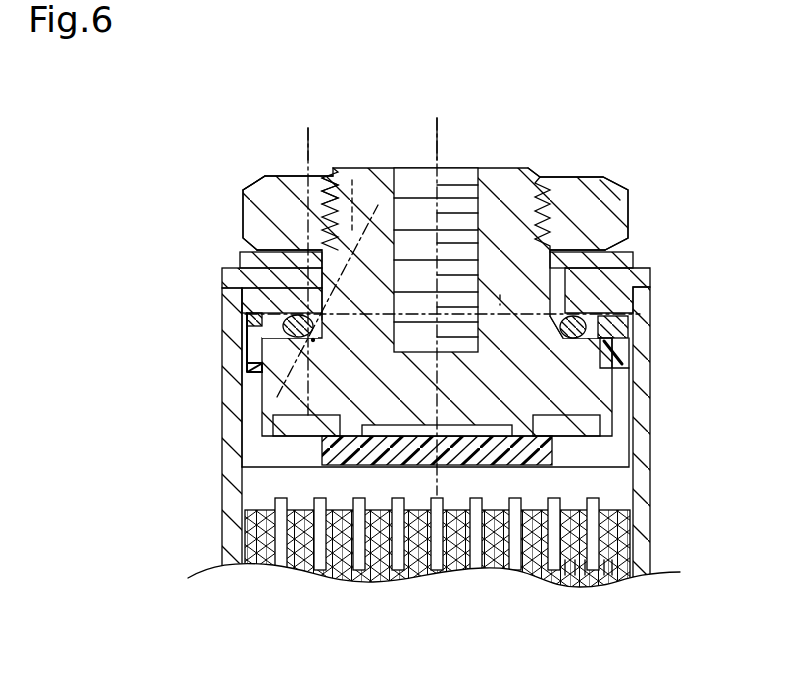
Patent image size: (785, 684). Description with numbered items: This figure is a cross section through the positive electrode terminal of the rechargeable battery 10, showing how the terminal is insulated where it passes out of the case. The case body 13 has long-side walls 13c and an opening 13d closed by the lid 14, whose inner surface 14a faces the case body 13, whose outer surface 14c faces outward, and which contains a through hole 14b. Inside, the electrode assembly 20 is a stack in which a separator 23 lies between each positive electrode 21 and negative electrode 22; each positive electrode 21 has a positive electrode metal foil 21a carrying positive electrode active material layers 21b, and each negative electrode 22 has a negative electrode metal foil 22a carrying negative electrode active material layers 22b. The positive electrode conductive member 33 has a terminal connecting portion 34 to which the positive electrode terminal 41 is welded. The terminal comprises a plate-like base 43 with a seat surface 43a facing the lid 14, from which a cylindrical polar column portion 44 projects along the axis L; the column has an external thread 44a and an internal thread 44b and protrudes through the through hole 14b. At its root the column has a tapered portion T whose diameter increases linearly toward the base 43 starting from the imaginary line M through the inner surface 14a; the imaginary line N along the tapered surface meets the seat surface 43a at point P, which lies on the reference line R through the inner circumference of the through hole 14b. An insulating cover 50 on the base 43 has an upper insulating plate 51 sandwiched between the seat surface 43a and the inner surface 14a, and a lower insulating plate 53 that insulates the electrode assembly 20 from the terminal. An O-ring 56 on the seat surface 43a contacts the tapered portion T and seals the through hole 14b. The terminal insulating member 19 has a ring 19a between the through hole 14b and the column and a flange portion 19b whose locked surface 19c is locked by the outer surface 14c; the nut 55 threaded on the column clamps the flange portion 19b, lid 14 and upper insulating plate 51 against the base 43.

The rechargeable battery 10 is at (716, 112).
The case body 13 is at (650, 458).
The long-side wall 13c is at (222, 528).
The opening 13d is at (247, 410).
The lid 14 is at (650, 280).
The inner surface 14a is at (625, 327).
The through hole 14b is at (625, 265).
The outer surface 14c is at (240, 260).
The terminal insulating member 19 is at (637, 255).
The ring 19a is at (313, 277).
The flange portion 19b is at (242, 250).
The locked surface 19c is at (590, 283).
The electrode assembly 20 is at (442, 564).
The positive electrode 21 is at (533, 510).
The positive electrode metal foil 21a is at (582, 580).
The positive electrode active material layer 21b is at (575, 587).
The negative electrode 22 is at (627, 507).
The negative electrode metal foil 22a is at (615, 578).
The negative electrode active material layer 22b is at (607, 580).
The separator 23 is at (585, 580).
The positive electrode conductive member 33 is at (598, 428).
The terminal connecting portion 34 is at (285, 442).
The positive electrode terminal 41 is at (393, 168).
The base 43 is at (605, 355).
The seat surface 43a is at (278, 316).
The polar column portion 44 is at (517, 167).
The external thread 44a is at (317, 172).
The internal thread 44b is at (477, 186).
The insulating cover 50 is at (605, 358).
The upper insulating plate 51 is at (607, 322).
The lower insulating plate 53 is at (330, 455).
The nut 55 is at (255, 181).
The O-ring 56 is at (563, 345).
The axis L is at (437, 145).
The reference line R is at (308, 128).
The imaginary line N is at (365, 262).
The imaginary line M is at (502, 307).
The tapered portion T is at (310, 317).
The point P is at (313, 340).